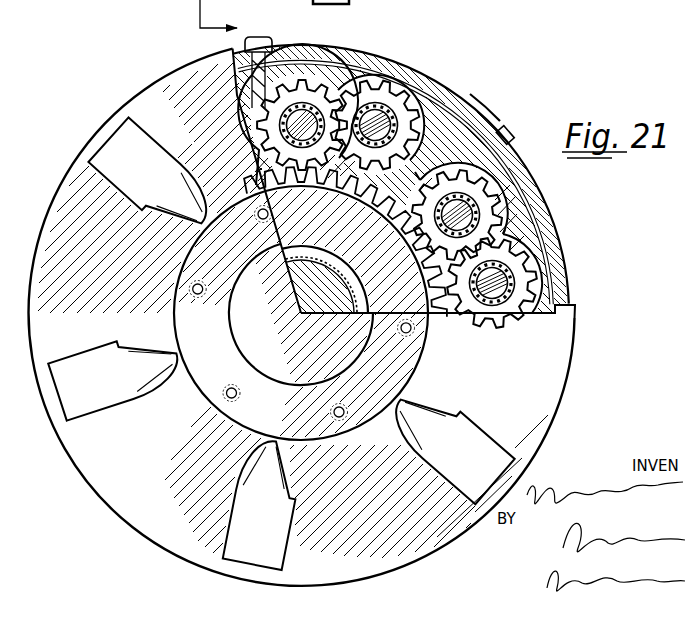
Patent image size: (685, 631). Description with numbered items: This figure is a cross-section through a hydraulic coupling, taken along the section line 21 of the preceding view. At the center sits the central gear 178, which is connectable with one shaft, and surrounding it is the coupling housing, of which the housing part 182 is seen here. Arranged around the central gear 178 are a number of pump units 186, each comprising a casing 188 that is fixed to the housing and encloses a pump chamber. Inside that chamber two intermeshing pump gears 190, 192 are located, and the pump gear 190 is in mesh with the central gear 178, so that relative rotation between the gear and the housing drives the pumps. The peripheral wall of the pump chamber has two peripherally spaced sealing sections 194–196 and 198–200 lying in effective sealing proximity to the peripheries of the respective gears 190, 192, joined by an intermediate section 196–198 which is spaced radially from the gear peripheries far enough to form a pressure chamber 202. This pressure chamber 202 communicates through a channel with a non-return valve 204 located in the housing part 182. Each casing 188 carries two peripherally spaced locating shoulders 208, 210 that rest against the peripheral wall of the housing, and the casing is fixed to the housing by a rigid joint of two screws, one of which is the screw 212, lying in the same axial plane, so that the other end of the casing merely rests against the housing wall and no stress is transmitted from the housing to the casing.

The section line 21 is at (231, 17).
The central gear 178 is at (430, 286).
The housing part 182 is at (557, 343).
The pump unit 186 is at (251, 89).
The casing 188 is at (463, 113).
The pump gear 190 is at (367, 57).
The pump gear 192 is at (435, 100).
The sealing section end point 194 is at (247, 167).
The sealing section end point 196 is at (270, 73).
The sealing section end point 198 is at (398, 82).
The sealing section end point 200 is at (357, 224).
The pressure chamber 202 is at (383, 70).
The non-return valve 204 is at (120, 153).
The locating shoulder 208 is at (337, 50).
The locating shoulder 210 is at (480, 115).
The screw 212 is at (513, 139).